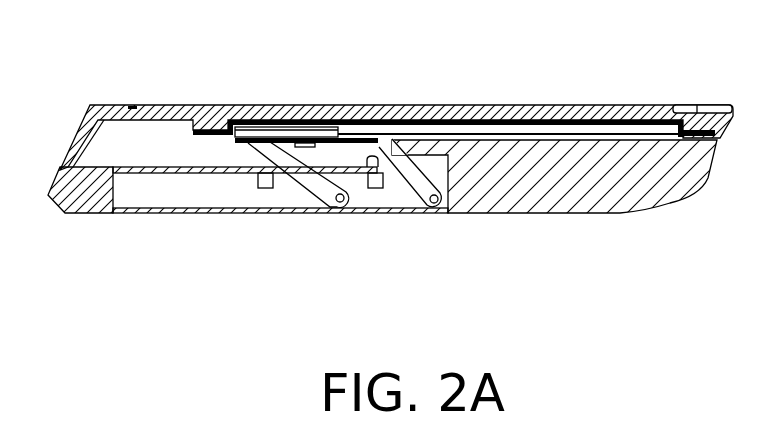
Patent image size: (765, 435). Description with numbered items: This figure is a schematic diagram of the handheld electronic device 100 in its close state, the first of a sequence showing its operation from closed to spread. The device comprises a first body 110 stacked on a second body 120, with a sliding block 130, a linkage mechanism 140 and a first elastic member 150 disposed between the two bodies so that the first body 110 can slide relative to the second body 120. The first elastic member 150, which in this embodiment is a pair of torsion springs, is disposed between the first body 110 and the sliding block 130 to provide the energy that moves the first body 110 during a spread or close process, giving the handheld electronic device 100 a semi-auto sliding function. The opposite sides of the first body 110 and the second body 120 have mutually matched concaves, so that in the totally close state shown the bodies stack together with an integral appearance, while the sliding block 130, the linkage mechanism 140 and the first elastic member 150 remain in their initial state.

The handheld electronic device 100 is at (390, 160).
The first body 110 is at (542, 115).
The second body 120 is at (525, 203).
The sliding block 130 is at (264, 148).
The linkage mechanism 140 is at (412, 183).
The first elastic member 150 is at (283, 122).